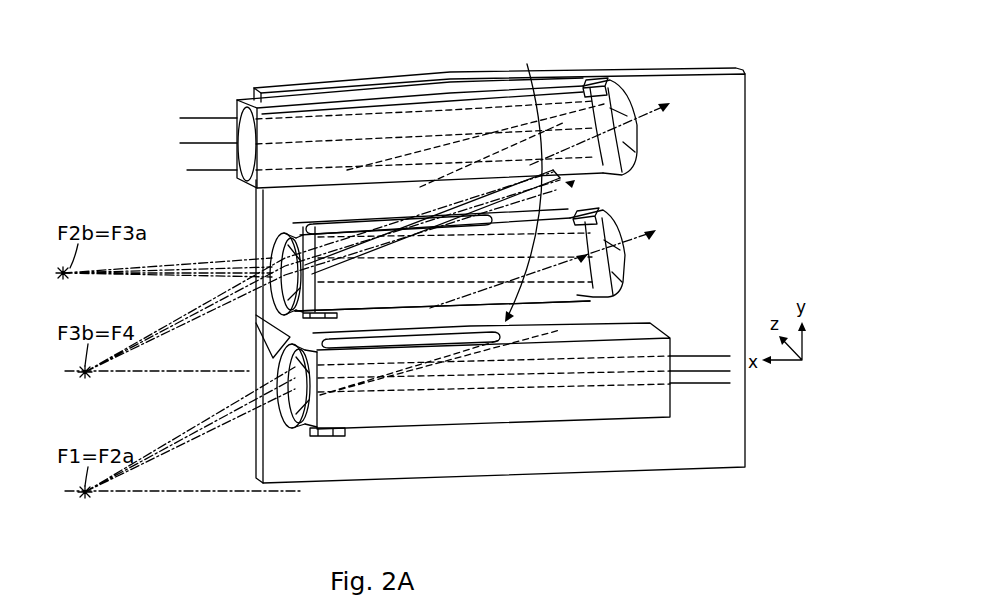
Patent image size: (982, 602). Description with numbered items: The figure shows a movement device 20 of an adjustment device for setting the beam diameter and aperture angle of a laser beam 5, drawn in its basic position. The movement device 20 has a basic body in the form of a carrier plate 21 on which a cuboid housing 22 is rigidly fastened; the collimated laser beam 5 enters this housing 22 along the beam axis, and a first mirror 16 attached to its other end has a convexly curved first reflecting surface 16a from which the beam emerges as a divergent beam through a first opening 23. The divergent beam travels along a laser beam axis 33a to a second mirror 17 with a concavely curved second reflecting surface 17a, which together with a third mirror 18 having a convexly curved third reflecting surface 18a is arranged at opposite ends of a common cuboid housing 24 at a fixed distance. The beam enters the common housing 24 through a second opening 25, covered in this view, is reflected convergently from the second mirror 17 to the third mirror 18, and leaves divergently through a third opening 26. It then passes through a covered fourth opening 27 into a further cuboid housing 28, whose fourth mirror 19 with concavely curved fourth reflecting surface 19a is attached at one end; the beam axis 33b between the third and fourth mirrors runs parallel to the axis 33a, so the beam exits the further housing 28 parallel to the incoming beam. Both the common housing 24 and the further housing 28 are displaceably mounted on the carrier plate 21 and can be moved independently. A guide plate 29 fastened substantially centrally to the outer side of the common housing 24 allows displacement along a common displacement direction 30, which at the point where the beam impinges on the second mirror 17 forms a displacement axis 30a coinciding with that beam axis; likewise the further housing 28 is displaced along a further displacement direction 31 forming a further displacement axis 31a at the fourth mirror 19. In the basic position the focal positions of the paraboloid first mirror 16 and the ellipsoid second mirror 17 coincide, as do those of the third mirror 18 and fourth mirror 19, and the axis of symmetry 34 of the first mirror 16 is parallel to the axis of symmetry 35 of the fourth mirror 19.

The laser beam 5 is at (705, 383).
The first mirror 16 is at (290, 420).
The first reflecting surface 16a is at (320, 390).
The second mirror 17 is at (620, 262).
The second reflecting surface 17a is at (599, 212).
The third mirror 18 is at (268, 245).
The third reflecting surface 18a is at (317, 267).
The fourth mirror 19 is at (628, 140).
The fourth reflecting surface 19a is at (587, 80).
The movement device 20 is at (700, 58).
The carrier plate 21 is at (723, 277).
The housing 22 is at (640, 407).
The first opening 23 is at (447, 342).
The common housing 24 is at (580, 297).
The second opening 25 is at (512, 330).
The third opening 26 is at (410, 225).
The fourth opening 27 is at (575, 183).
The further housing 28 is at (307, 104).
The guide plate 29 is at (270, 338).
The common displacement direction 30 is at (523, 182).
The displacement axis 30a is at (645, 238).
The further displacement direction 31 is at (437, 127).
The further displacement axis 31a is at (645, 113).
The laser beam axis 33a is at (478, 348).
The laser beam axis 33b is at (420, 192).
The axis of symmetry 34 is at (115, 500).
The axis of symmetry 35 is at (122, 373).